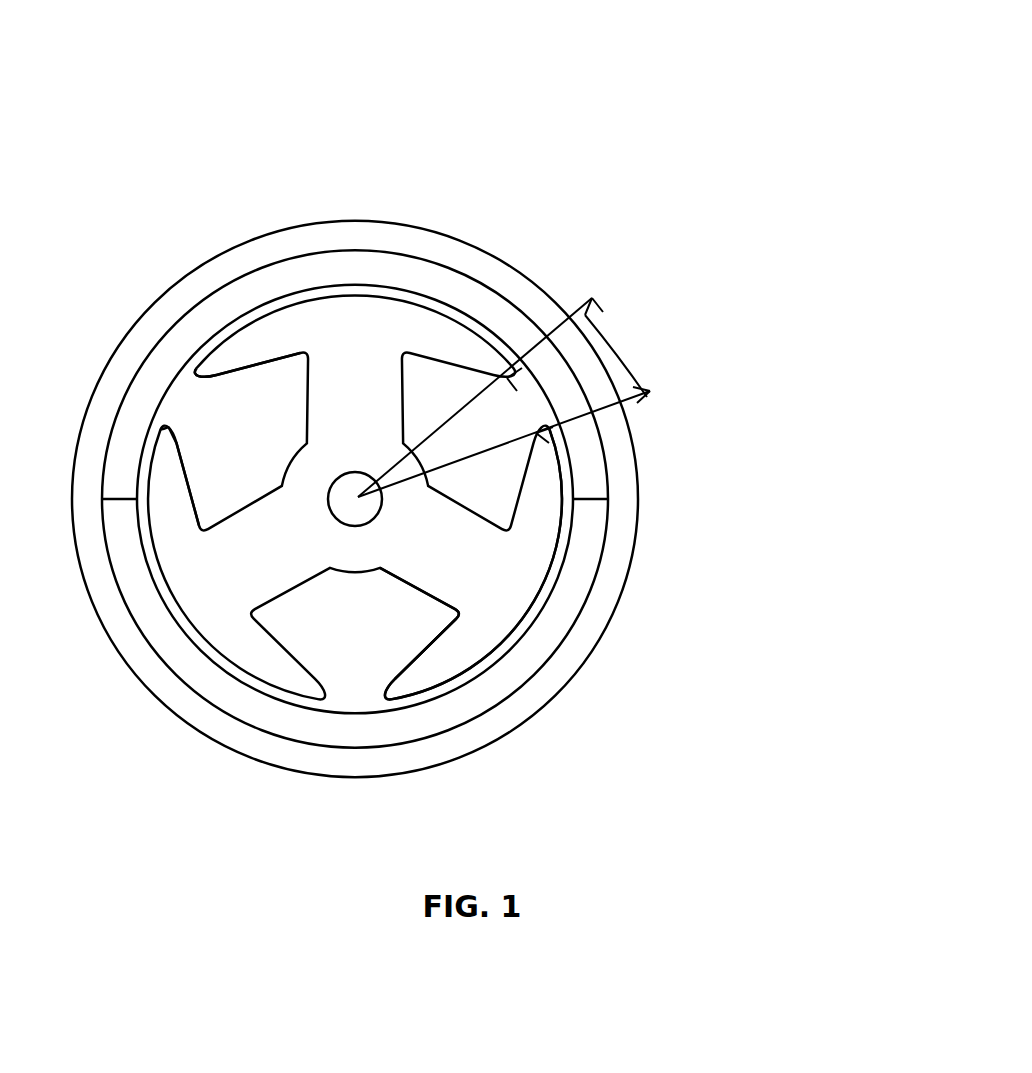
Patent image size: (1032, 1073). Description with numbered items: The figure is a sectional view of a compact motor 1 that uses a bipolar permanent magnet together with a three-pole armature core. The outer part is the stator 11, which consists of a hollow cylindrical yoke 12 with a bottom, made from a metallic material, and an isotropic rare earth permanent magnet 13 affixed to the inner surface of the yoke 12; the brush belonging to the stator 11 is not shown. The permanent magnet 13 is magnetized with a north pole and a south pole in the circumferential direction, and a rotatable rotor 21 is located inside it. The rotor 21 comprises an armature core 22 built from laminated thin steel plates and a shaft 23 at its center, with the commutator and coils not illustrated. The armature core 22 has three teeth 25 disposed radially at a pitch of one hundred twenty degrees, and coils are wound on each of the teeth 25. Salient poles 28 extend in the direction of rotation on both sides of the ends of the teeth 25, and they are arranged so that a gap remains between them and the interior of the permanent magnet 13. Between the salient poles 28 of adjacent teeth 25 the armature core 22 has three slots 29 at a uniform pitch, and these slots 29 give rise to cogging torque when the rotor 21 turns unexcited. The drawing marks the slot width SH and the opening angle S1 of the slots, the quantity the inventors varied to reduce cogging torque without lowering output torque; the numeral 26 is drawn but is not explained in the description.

The compact motor 1 is at (420, 170).
The stator 11 is at (706, 133).
The yoke 12 is at (442, 247).
The permanent magnet 13 is at (497, 314).
The opening angle of the slots S1 is at (617, 351).
The slot width SH is at (528, 399).
The rotor 21 is at (797, 522).
The armature core 22 is at (335, 327).
The shaft 23 is at (350, 512).
The teeth 25 is at (442, 552).
The winding slot 26 is at (412, 636).
The salient poles 28 is at (538, 478).
The slots 29 is at (188, 405).